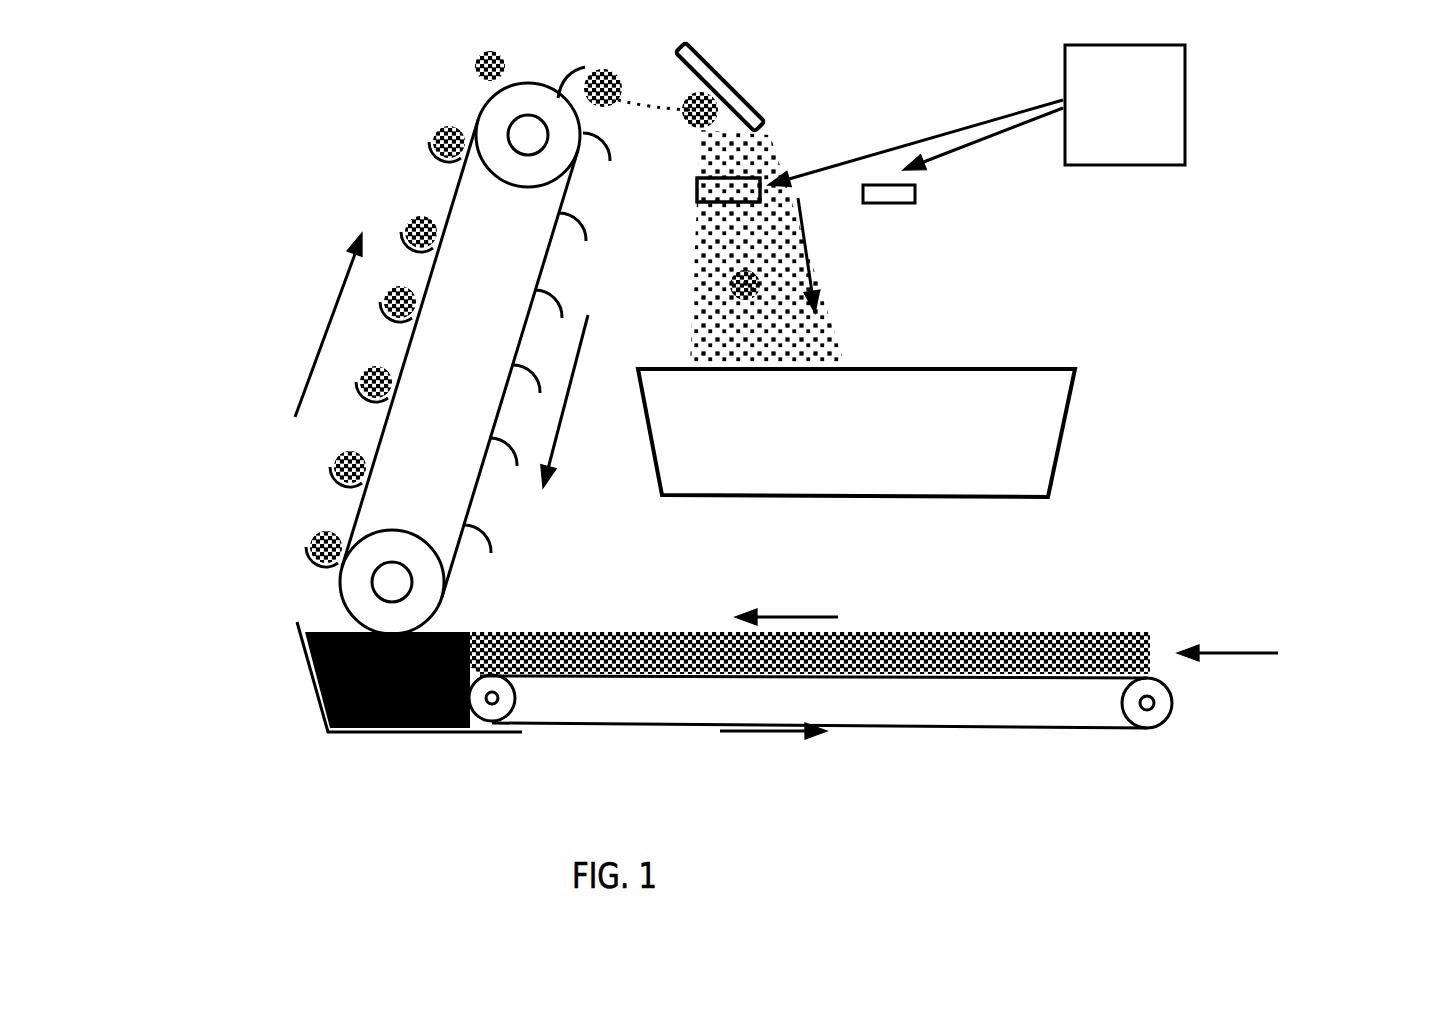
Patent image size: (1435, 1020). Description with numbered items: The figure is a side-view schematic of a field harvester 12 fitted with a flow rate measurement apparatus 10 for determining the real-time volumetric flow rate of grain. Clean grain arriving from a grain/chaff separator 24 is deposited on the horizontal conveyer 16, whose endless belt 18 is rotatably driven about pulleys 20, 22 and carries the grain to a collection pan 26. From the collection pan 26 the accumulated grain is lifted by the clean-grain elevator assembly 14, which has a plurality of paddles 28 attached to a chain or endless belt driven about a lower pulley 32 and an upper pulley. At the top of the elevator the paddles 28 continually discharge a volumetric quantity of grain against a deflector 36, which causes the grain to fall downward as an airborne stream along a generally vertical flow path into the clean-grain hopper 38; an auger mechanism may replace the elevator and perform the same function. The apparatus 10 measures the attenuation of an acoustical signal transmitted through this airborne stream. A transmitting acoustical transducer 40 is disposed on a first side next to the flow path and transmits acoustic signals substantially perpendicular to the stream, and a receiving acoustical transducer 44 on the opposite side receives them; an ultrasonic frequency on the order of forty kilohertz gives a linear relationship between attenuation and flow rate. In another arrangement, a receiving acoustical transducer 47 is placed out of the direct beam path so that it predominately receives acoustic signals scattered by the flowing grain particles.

The flow rate measurement apparatus 10 is at (978, 155).
The field harvester 12 is at (449, 342).
The clean-grain elevator assembly 14 is at (322, 478).
The horizontal conveyer 16 is at (837, 685).
The endless belt 18 is at (938, 733).
The pulley 20 is at (1147, 703).
The pulley 22 is at (492, 704).
The grain/chaff separator 24 is at (1368, 632).
The collection pan 26 is at (305, 702).
The paddles 28 is at (308, 573).
The pulley 32 is at (392, 582).
The deflector 36 is at (885, 132).
The clean-grain hopper 38 is at (985, 459).
The transmitting acoustical transducer 40 is at (690, 182).
The receiving acoustical transducer 44 is at (728, 190).
The receiving acoustical transducer 47 is at (867, 217).